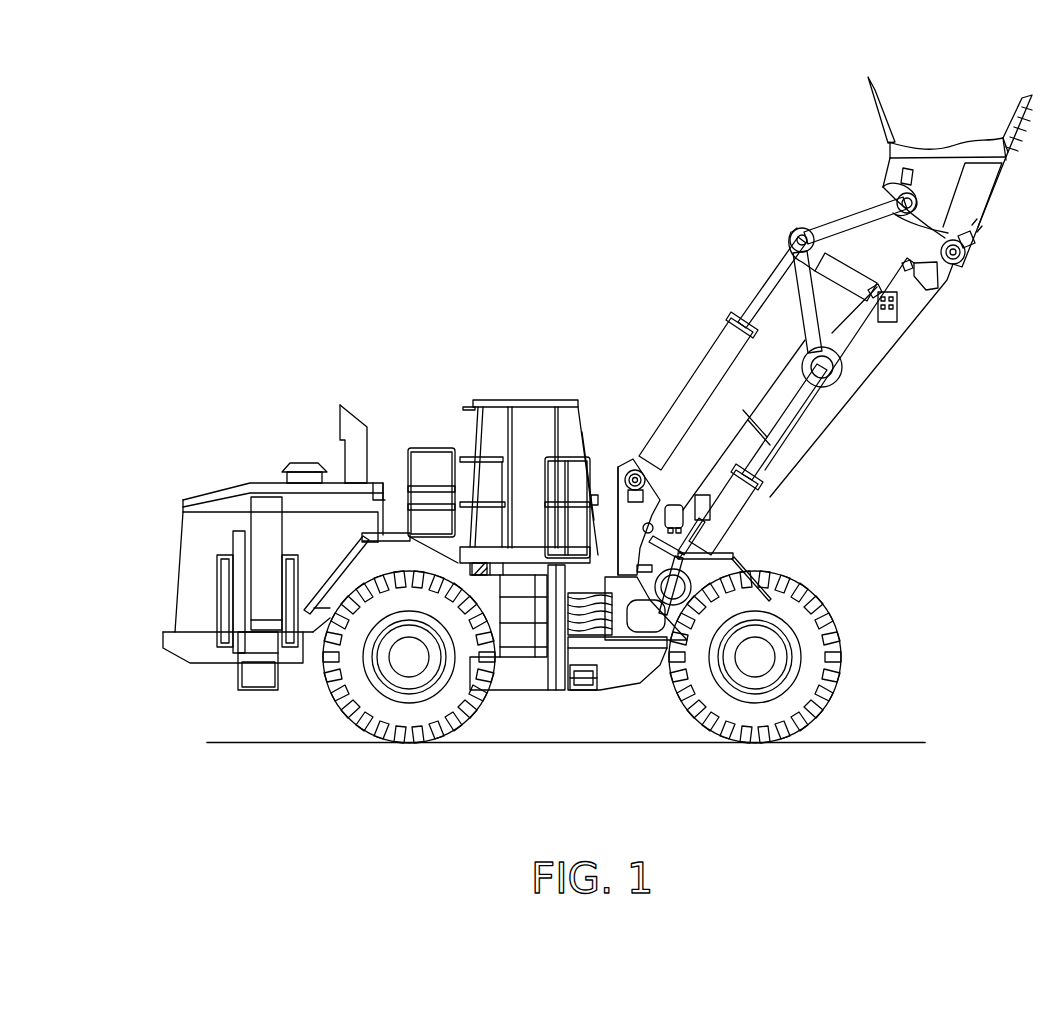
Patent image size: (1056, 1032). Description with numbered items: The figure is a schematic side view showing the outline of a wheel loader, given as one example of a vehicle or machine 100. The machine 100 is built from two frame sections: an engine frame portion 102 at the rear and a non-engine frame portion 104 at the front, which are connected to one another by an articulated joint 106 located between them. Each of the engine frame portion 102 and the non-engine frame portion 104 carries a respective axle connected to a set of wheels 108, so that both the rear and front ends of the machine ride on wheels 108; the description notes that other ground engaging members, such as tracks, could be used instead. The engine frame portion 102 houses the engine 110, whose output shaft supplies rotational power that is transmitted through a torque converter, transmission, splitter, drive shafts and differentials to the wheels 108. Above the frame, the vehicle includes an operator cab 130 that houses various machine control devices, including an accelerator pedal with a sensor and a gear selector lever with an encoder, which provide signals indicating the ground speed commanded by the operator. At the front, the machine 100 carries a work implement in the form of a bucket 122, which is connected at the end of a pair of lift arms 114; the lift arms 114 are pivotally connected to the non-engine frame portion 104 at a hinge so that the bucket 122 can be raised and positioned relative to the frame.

The machine 100 is at (695, 152).
The engine frame portion 102 is at (284, 412).
The non-engine frame portion 104 is at (627, 682).
The articulated joint 106 is at (585, 701).
The wheels 108 is at (479, 713).
The engine 110 is at (272, 482).
The lift arms 114 is at (849, 343).
The bucket 122 is at (920, 150).
The operator cab 130 is at (520, 399).